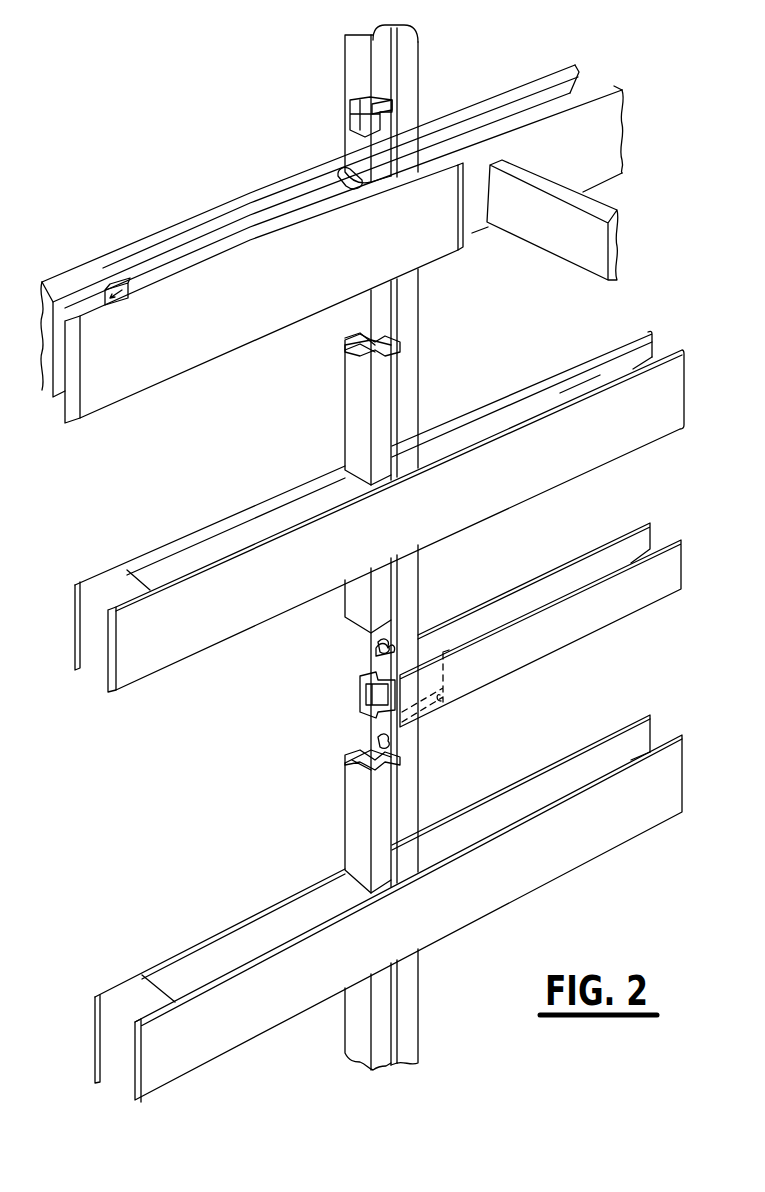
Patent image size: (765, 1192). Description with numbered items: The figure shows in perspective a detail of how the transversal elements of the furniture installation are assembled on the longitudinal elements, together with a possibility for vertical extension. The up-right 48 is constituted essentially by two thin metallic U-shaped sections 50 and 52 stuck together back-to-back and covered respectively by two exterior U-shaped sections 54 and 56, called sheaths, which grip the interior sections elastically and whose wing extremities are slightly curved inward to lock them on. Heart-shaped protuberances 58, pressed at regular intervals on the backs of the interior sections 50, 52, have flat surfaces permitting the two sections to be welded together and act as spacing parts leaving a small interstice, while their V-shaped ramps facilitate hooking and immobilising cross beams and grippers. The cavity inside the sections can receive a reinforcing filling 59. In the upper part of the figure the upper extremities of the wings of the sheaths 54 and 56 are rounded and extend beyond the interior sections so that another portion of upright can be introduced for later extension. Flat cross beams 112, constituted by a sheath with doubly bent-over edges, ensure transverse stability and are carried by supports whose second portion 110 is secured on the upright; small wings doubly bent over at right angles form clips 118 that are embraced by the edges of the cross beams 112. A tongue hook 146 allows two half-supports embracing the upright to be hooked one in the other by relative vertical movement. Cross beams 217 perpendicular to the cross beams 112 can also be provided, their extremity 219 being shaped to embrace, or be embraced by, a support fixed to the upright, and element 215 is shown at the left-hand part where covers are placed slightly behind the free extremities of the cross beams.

The up-right 48 is at (434, 587).
The U-shaped section 50 is at (392, 110).
The U-shaped section 52 is at (346, 352).
The exterior section 54 is at (416, 76).
The exterior section 56 is at (345, 67).
The heart-shaped protuberances 58 is at (376, 642).
The filling 59 is at (355, 115).
The second portion 110 is at (546, 378).
The cross beams 112 is at (203, 338).
The small wings doubly bent over at right angles 118 is at (449, 661).
The hook 146 is at (362, 689).
The wall bracket 215 is at (120, 281).
The cross beams 217 is at (626, 253).
The extremity of cross beam 219 is at (542, 150).